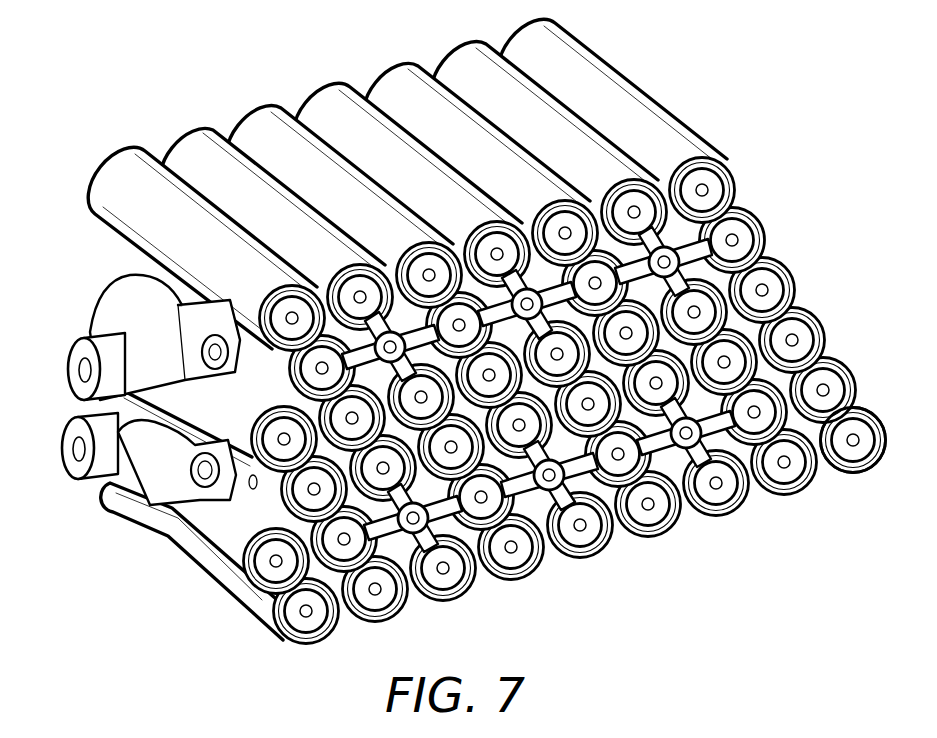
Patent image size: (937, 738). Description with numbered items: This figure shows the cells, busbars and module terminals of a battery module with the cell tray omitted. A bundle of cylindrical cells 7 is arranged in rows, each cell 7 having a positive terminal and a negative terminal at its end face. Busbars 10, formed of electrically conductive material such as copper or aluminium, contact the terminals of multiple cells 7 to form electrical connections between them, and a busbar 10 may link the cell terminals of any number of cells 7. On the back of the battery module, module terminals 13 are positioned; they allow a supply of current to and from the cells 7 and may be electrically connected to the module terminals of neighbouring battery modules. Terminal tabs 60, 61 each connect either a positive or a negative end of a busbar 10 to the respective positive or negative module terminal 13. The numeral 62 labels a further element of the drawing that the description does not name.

The cell 7 is at (627, 107).
The busbar 10 is at (592, 549).
The module terminal 13 is at (68, 357).
The terminal tab 60 is at (100, 288).
The terminal tab 61 is at (207, 570).
The cell end cap 62 is at (860, 456).